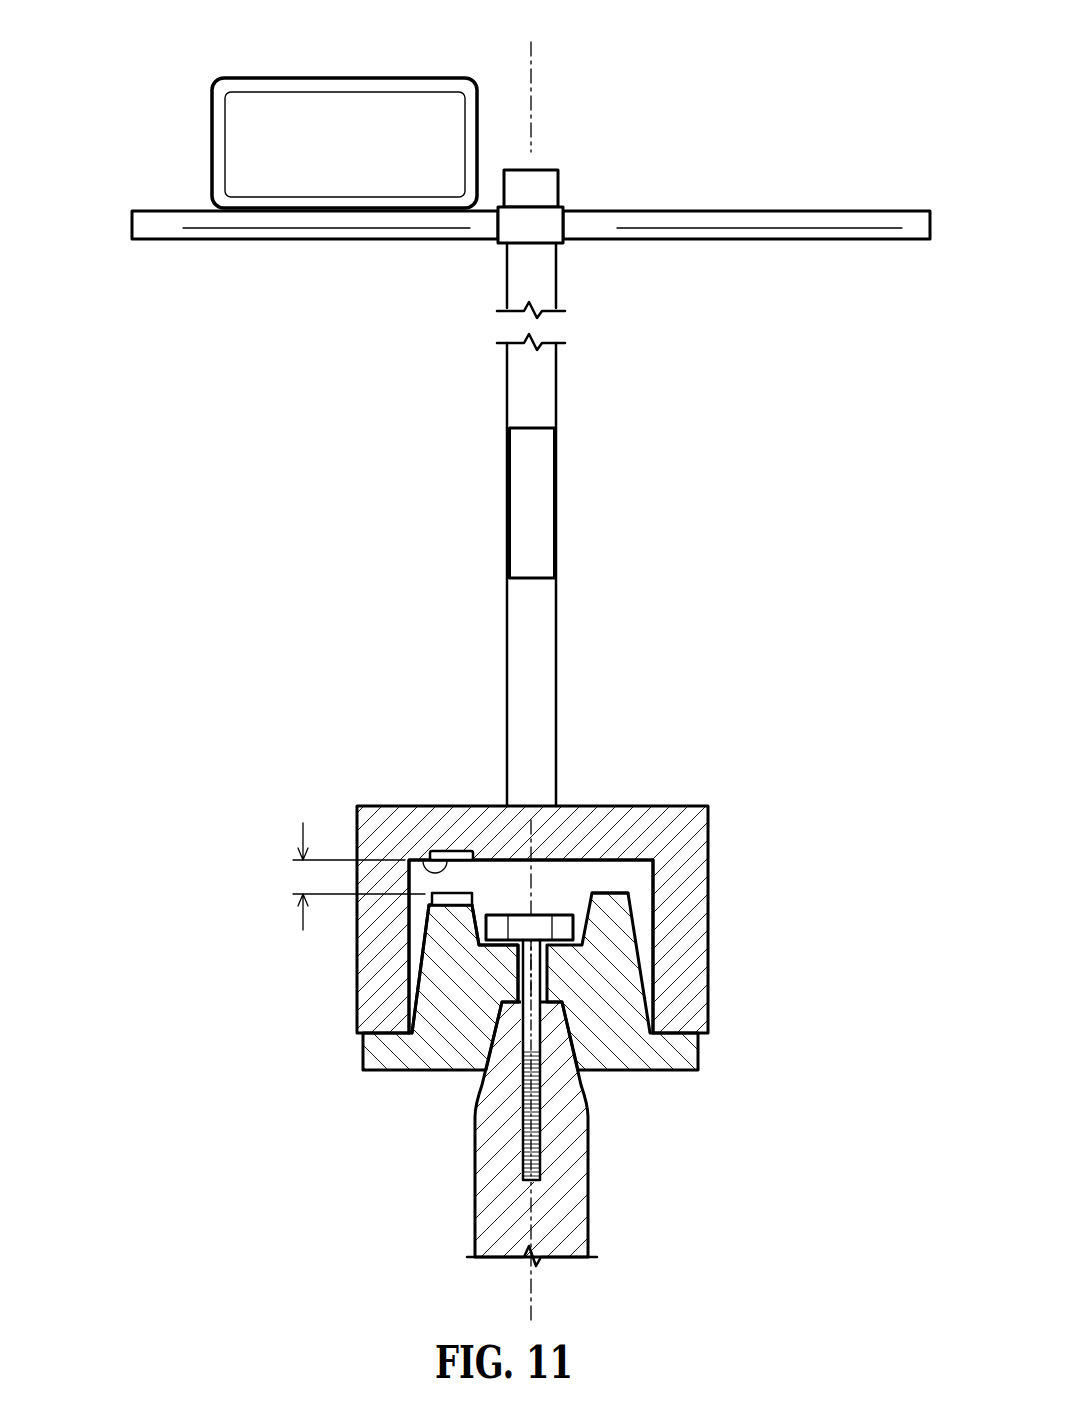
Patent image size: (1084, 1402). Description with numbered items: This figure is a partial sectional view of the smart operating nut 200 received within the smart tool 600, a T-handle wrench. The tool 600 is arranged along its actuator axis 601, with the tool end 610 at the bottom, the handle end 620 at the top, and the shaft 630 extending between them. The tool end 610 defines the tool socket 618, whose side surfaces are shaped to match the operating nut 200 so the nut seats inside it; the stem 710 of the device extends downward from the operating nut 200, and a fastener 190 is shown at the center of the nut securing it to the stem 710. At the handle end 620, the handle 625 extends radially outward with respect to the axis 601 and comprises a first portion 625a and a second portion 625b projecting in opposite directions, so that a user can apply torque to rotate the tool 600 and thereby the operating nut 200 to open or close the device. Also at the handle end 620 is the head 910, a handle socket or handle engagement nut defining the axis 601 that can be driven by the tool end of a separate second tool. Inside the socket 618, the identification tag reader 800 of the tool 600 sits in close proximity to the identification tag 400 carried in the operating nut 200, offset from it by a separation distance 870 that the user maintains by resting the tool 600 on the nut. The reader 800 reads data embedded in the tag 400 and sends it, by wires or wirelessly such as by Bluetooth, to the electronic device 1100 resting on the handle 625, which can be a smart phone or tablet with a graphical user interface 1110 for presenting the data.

The electronic device 1100 is at (318, 148).
The graphical user interface 1110 is at (277, 182).
The handle 625 is at (285, 178).
The first portion 625a is at (182, 208).
The second portion 625b is at (717, 208).
The actuator axis 601 is at (531, 77).
The head 910 is at (558, 183).
The handle end 620 is at (500, 263).
The shaft 630 is at (556, 362).
The tool 600 is at (625, 919).
The tool end 610 is at (708, 905).
The tool socket 618 is at (648, 882).
The identification tag reader 800 is at (427, 862).
The separation distance 870 is at (297, 878).
The identification tag 400 is at (443, 893).
The bolt 190 is at (513, 913).
The operating nut 200 is at (640, 1072).
The stem 710 is at (475, 1182).